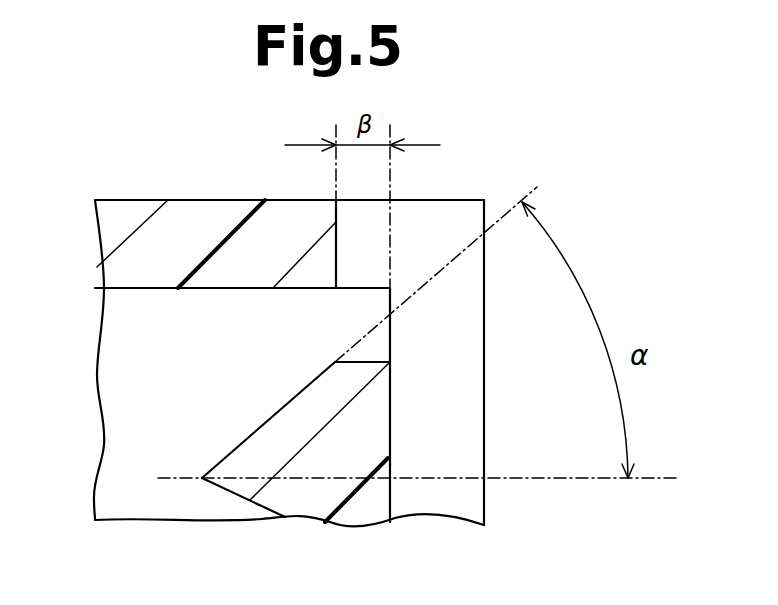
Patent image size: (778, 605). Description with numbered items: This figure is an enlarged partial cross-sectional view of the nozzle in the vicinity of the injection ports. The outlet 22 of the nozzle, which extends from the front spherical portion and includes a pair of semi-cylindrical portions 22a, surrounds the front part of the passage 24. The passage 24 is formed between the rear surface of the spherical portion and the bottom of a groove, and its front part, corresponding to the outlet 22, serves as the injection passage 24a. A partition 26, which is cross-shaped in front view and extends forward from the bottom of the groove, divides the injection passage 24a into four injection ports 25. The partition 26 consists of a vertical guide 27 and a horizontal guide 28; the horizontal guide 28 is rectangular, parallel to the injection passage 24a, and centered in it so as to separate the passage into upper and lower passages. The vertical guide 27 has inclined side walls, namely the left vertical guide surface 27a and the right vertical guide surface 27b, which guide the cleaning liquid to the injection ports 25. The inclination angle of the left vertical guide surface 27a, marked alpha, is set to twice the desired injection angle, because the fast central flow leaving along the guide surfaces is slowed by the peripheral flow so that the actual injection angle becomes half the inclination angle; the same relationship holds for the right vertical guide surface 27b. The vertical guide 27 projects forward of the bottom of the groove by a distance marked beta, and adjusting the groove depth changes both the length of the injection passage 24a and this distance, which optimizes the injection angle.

The outlet 22 is at (300, 200).
The semi-cylindrical portion 22a is at (486, 354).
The passage 24 is at (125, 288).
The injection passage 24a is at (233, 288).
The injection port 25 is at (370, 362).
The partition 26 is at (389, 498).
The vertical guide 27 is at (370, 424).
The left vertical guide surface 27a is at (262, 425).
The right vertical guide surface 27b is at (228, 492).
The horizontal guide 28 is at (108, 402).